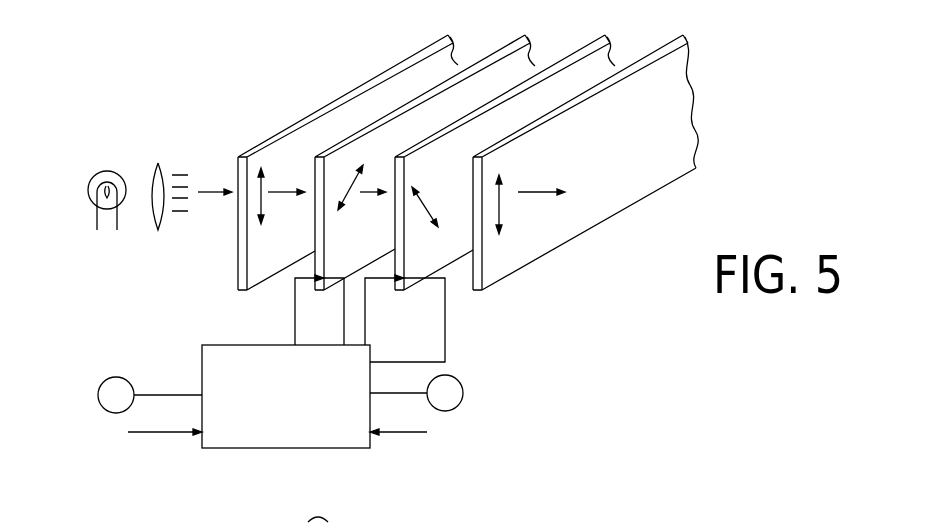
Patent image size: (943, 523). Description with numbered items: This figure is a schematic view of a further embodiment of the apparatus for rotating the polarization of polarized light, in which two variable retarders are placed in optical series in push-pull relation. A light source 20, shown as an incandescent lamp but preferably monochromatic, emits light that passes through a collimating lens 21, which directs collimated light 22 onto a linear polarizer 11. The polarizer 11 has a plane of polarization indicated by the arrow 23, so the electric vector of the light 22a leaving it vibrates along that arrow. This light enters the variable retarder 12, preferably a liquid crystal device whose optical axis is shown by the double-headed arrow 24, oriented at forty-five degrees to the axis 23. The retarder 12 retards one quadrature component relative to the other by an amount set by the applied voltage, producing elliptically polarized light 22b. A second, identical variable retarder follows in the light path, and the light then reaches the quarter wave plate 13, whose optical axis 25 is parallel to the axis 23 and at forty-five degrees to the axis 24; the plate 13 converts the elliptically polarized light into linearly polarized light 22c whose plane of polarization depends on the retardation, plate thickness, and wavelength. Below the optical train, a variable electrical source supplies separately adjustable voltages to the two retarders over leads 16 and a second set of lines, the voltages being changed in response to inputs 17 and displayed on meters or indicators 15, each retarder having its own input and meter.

The linear polarizer 11 is at (413, 55).
The variable retarder 12 is at (425, 149).
The quarter wave plate 13 is at (650, 46).
The meter or indicator 15 is at (150, 373).
The leads 16 is at (319, 310).
The input 17 is at (165, 452).
The light source 20 is at (116, 172).
The collimating lens 21 is at (158, 164).
The collimated light 22 is at (178, 175).
The light output from the linear polarizer 22a is at (278, 193).
The light output from the variable retarder 22b is at (367, 193).
The linearly polarized light 22c is at (525, 193).
The arrow indicating axis of polarization 23 is at (262, 187).
The double-headed arrow representing optical axis 24 is at (363, 172).
The optical axis of quarter wave plate 25 is at (504, 192).